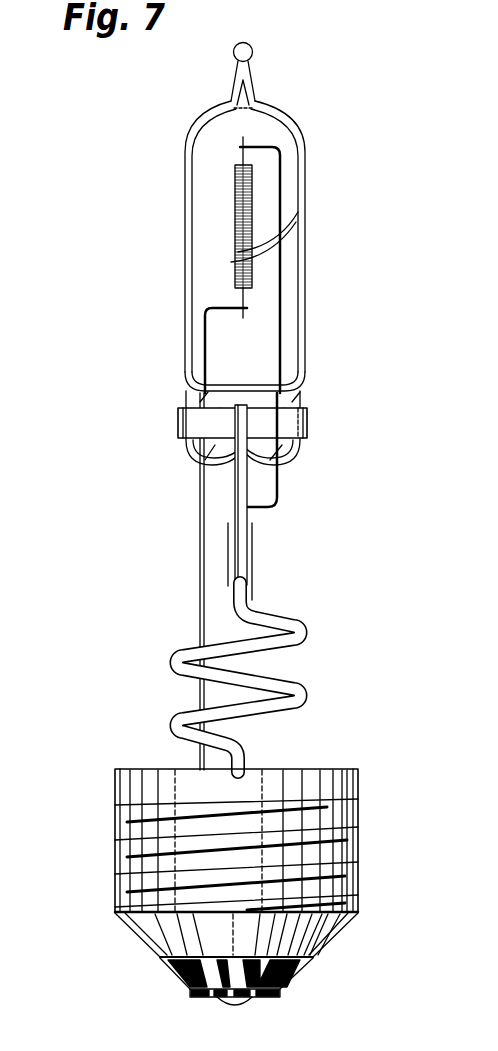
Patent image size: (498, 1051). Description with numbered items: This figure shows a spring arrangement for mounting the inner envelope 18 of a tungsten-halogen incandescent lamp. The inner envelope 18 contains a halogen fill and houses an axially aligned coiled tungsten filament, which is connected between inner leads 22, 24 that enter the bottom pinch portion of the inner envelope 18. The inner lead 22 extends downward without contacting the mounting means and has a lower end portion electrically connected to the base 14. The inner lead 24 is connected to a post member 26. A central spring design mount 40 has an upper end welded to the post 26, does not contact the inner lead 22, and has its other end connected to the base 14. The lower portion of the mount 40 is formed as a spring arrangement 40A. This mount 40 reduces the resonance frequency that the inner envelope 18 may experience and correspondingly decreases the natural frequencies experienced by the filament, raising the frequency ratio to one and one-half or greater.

The base 14 is at (360, 779).
The inner envelope 18 is at (306, 199).
The inner lead 22 is at (200, 557).
The inner lead 24 is at (282, 494).
The post member 26 is at (236, 495).
The central spring design mount 40 is at (253, 592).
The spring arrangement 40A is at (309, 633).